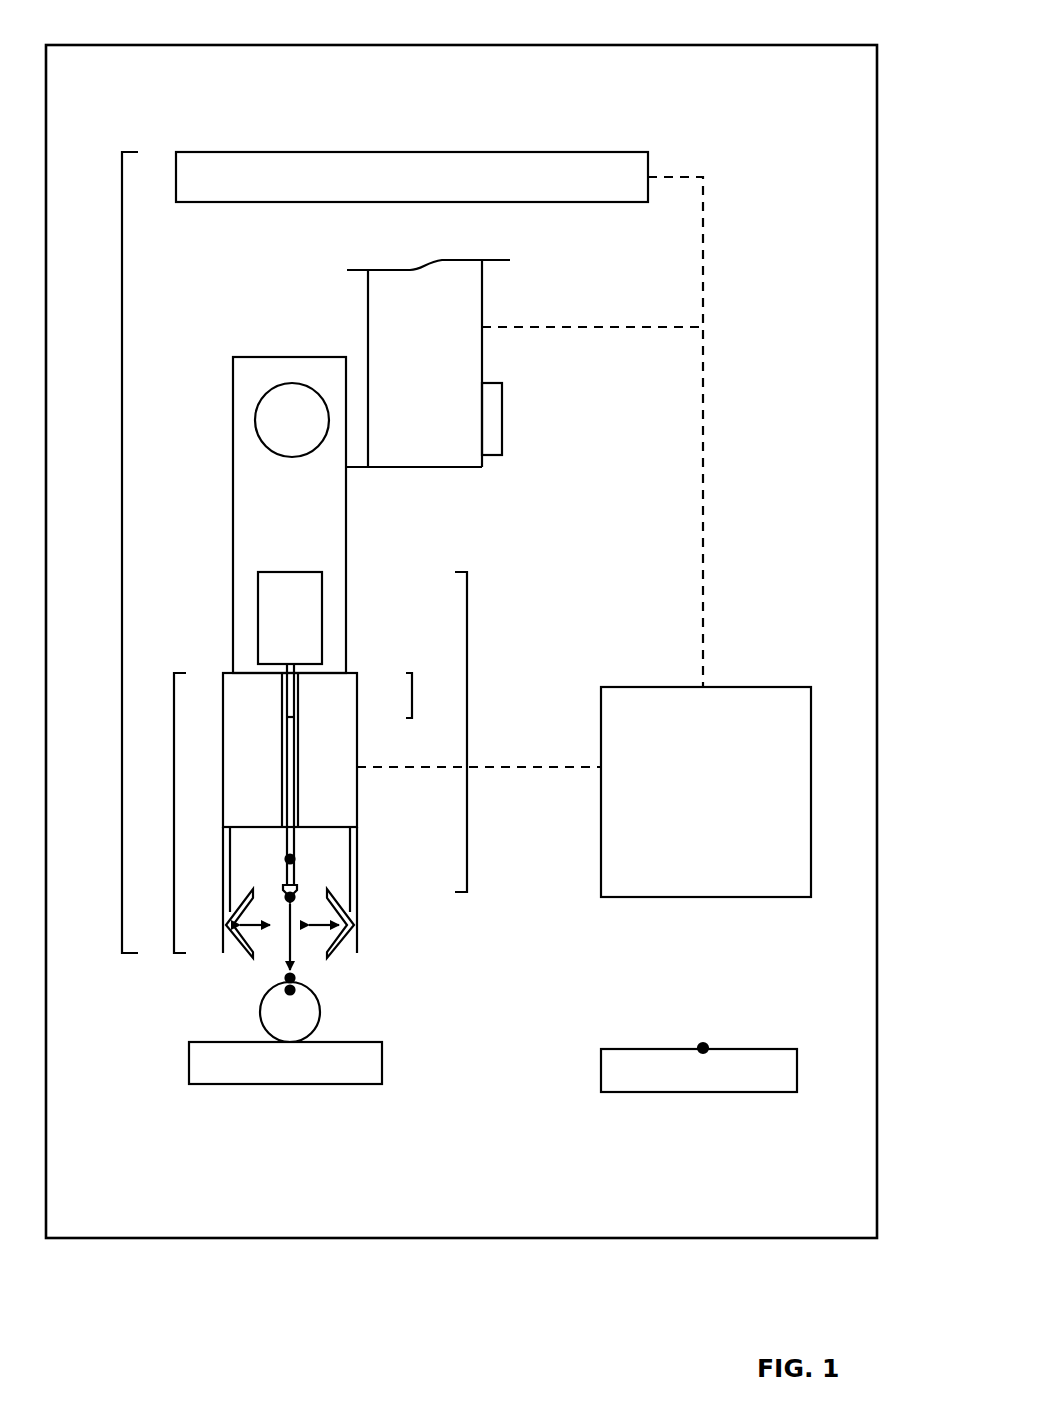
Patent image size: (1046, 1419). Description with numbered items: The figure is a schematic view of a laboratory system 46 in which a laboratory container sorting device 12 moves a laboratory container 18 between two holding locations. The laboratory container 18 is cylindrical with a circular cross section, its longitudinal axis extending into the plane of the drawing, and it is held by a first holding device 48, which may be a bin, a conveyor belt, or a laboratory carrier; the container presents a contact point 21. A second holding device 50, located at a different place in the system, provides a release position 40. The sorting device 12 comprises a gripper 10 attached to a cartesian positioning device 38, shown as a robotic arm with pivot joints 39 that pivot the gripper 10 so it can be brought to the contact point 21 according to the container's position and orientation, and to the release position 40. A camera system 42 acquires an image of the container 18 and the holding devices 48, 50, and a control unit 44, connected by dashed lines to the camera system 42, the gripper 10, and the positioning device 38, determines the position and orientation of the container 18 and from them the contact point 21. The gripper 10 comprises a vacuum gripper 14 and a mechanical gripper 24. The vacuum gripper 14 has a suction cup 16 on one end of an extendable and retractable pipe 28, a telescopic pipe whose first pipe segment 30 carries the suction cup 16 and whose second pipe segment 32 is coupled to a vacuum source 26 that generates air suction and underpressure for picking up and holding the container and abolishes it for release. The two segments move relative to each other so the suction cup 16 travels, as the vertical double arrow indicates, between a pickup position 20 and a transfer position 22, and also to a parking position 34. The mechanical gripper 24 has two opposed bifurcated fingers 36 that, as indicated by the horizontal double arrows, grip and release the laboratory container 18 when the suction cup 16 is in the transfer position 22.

The gripper 10 is at (207, 660).
The laboratory container sorting device 12 is at (122, 553).
The vacuum gripper 14 is at (467, 797).
The suction cup 16 is at (297, 887).
The laboratory container 18 is at (293, 1018).
The pickup position 20 is at (290, 978).
The contact point 21 is at (290, 990).
The transfer position 22 is at (290, 897).
The mechanical gripper 24 is at (174, 758).
The vacuum source 26 is at (300, 647).
The extendable and retractable pipe 28 is at (431, 695).
The first pipe segment 30 is at (292, 842).
The second pipe segment 32 is at (297, 703).
The parking position 34 is at (290, 859).
The bifurcated fingers 36 is at (223, 921).
The cartesian positioning device 38 is at (298, 338).
The pivot joints 39 is at (292, 422).
The release position 40 is at (703, 1048).
The camera system 42 is at (628, 162).
The control unit 44 is at (727, 710).
The laboratory system 46 is at (537, 55).
The first holding device 48 is at (315, 1073).
The second holding device 50 is at (652, 1078).